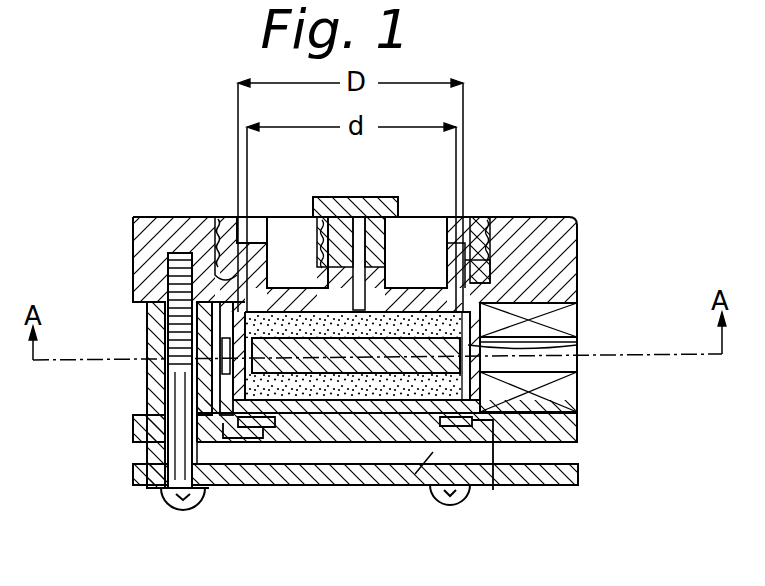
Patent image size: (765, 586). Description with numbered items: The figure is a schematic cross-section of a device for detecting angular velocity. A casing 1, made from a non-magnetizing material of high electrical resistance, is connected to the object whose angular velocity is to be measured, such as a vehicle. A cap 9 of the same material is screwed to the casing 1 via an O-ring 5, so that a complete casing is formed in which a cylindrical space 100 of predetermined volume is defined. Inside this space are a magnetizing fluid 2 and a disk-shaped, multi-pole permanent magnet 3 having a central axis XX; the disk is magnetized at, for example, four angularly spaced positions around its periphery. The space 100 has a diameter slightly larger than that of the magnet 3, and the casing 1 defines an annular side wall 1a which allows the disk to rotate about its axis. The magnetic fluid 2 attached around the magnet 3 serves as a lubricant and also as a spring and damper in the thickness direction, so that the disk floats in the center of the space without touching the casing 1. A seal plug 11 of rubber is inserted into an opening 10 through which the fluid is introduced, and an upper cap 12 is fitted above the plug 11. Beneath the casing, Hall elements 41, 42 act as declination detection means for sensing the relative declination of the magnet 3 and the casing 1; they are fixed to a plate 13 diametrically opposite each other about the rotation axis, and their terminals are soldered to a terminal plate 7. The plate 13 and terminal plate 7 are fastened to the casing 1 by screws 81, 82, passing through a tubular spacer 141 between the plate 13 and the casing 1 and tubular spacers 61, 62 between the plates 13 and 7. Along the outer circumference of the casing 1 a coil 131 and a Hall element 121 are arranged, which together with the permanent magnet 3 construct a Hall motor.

The casing 1 is at (562, 240).
The annular side wall 1a is at (578, 345).
The coil 131 is at (578, 316).
The plate 13 is at (560, 425).
The terminal plate 7 is at (570, 470).
The permanent magnet 3 is at (360, 345).
The magnetizing fluid 2 is at (383, 390).
The O-ring 5 is at (236, 275).
The cap 9 is at (476, 243).
The cylindrical space 100 is at (460, 300).
The opening 10 is at (312, 205).
The seal plug 11 is at (370, 207).
The upper cap 12 is at (337, 197).
The Hall element 121 is at (222, 342).
The tubular spacer 141 is at (148, 388).
The tubular spacer 61 is at (153, 458).
The tubular spacer 62 is at (412, 490).
The screw 81 is at (178, 508).
The screw 82 is at (462, 505).
The Hall element 41 is at (245, 440).
The Hall element 42 is at (470, 430).
The central axis XX is at (325, 490).